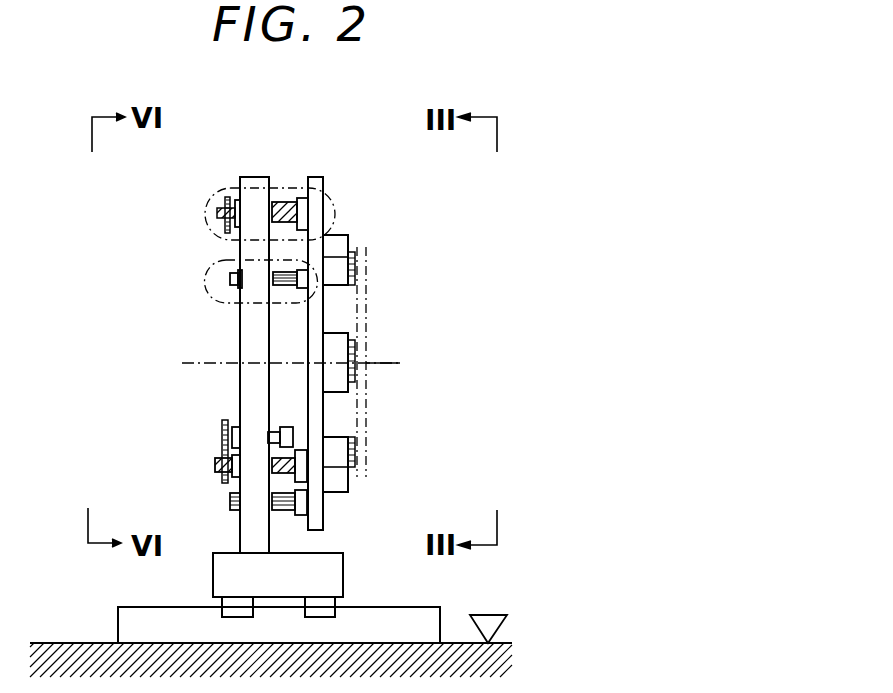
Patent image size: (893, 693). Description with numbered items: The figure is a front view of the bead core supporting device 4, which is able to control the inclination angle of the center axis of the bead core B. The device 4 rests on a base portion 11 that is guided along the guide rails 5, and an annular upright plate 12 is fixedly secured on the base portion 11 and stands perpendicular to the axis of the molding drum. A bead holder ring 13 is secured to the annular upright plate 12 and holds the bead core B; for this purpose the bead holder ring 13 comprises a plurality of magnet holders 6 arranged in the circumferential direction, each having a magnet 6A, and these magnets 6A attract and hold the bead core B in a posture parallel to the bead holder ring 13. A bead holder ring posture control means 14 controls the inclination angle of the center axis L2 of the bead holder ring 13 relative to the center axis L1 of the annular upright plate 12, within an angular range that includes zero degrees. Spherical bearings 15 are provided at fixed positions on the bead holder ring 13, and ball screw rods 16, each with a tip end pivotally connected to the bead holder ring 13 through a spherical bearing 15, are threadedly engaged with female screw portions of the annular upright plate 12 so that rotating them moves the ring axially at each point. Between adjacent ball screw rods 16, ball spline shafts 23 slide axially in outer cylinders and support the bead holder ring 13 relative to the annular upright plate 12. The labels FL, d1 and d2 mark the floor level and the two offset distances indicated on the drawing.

The bead core supporting device 4 is at (444, 235).
The guide rails 5 is at (140, 617).
The magnet holders 6 is at (340, 237).
The magnet 6A is at (355, 268).
The base portion 11 is at (222, 560).
The annular upright plate 12 is at (242, 177).
The bead holder ring 13 is at (323, 178).
The bead holder ring posture control means 14 is at (262, 154).
The spherical bearings 15 is at (302, 200).
The ball screw rods 16 is at (283, 203).
The ball spline shafts 23 is at (288, 272).
The bead core B is at (358, 467).
The center axis of the annular upright plate L1 is at (210, 363).
The center axis of the bead holder ring L2 is at (385, 363).
The floor level FL is at (508, 622).
The distance d1 is at (205, 212).
The distance d2 is at (205, 285).